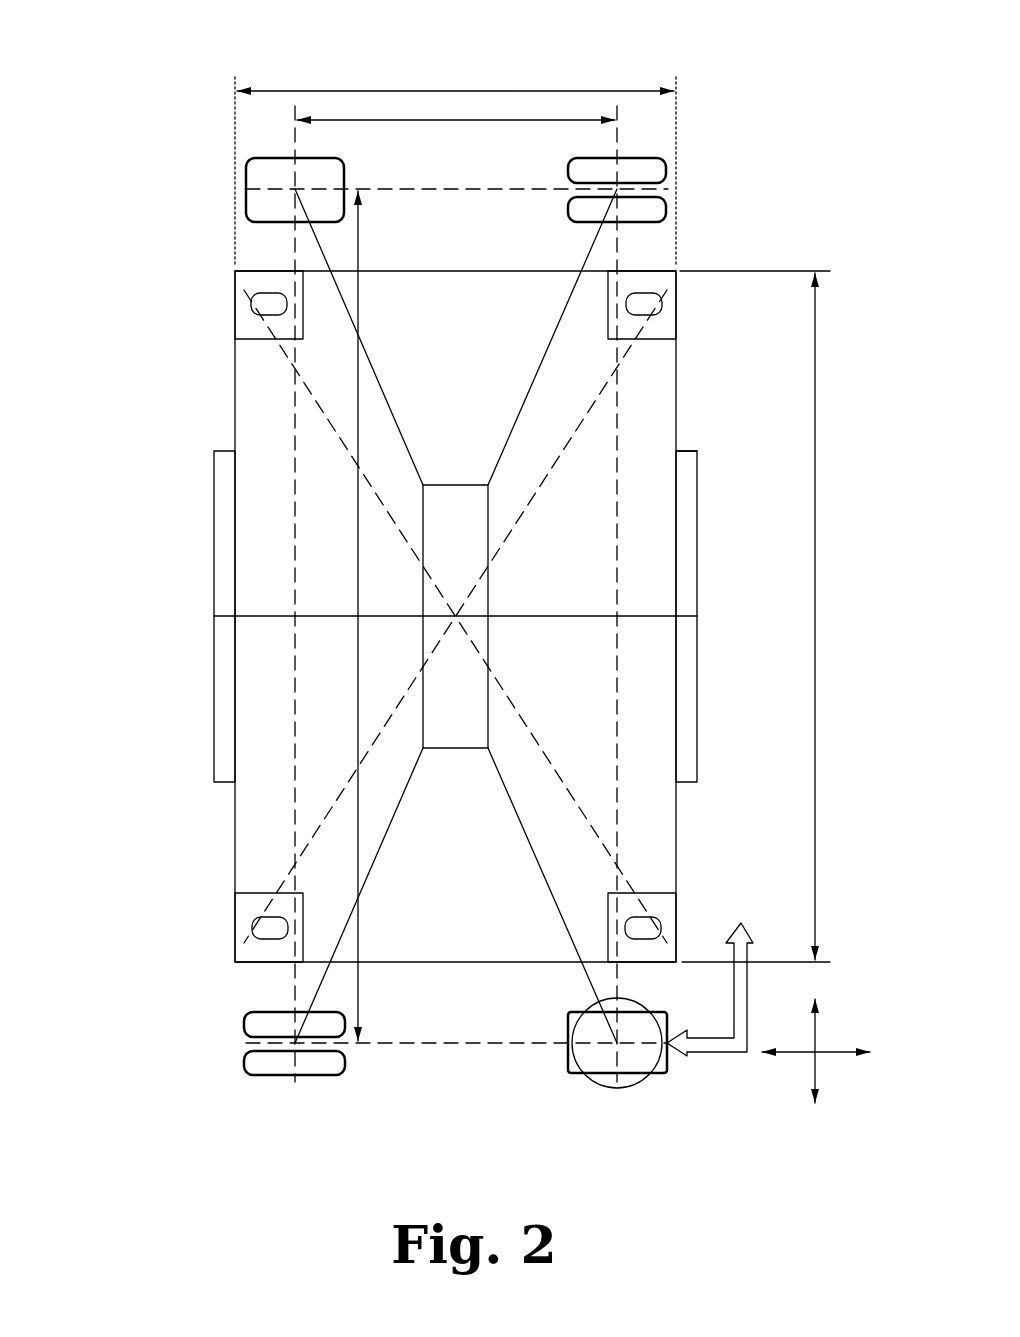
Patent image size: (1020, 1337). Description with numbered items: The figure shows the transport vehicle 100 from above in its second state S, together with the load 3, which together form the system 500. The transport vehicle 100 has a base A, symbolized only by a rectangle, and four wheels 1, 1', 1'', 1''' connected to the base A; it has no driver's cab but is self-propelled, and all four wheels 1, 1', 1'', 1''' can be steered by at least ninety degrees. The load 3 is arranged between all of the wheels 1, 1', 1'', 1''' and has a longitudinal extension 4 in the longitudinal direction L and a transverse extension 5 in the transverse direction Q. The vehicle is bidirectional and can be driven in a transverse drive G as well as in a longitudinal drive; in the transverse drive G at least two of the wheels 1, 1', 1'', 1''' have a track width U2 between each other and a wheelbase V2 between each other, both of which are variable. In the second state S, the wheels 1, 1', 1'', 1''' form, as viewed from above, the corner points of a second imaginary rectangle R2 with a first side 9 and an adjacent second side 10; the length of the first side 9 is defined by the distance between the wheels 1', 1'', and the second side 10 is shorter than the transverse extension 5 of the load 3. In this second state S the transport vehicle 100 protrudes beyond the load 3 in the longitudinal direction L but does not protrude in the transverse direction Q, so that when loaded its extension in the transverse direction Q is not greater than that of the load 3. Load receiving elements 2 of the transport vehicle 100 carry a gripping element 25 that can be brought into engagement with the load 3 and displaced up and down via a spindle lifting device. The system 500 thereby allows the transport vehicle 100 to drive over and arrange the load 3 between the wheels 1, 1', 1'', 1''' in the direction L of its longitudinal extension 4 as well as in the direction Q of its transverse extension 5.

The wheel 1 is at (617, 1073).
The wheel 1' is at (294, 1080).
The wheel 1'' is at (266, 190).
The wheel 1''' is at (656, 191).
The load receiving element 2 is at (697, 562).
The load 3 is at (467, 866).
The longitudinal extension 4 is at (817, 616).
The transverse extension 5 is at (455, 90).
The first side 9 is at (295, 408).
The second side 10 is at (455, 189).
The gripping element 25 is at (688, 451).
The transport vehicle 100 is at (166, 381).
The system 500 is at (166, 831).
The base A is at (455, 498).
The transverse drive G is at (88, 616).
The longitudinal direction L is at (820, 1027).
The transverse direction Q is at (836, 1054).
The second imaginary rectangle R2 is at (295, 473).
The second state S is at (782, 201).
The track width U2 is at (360, 298).
The wheelbase V2 is at (455, 122).